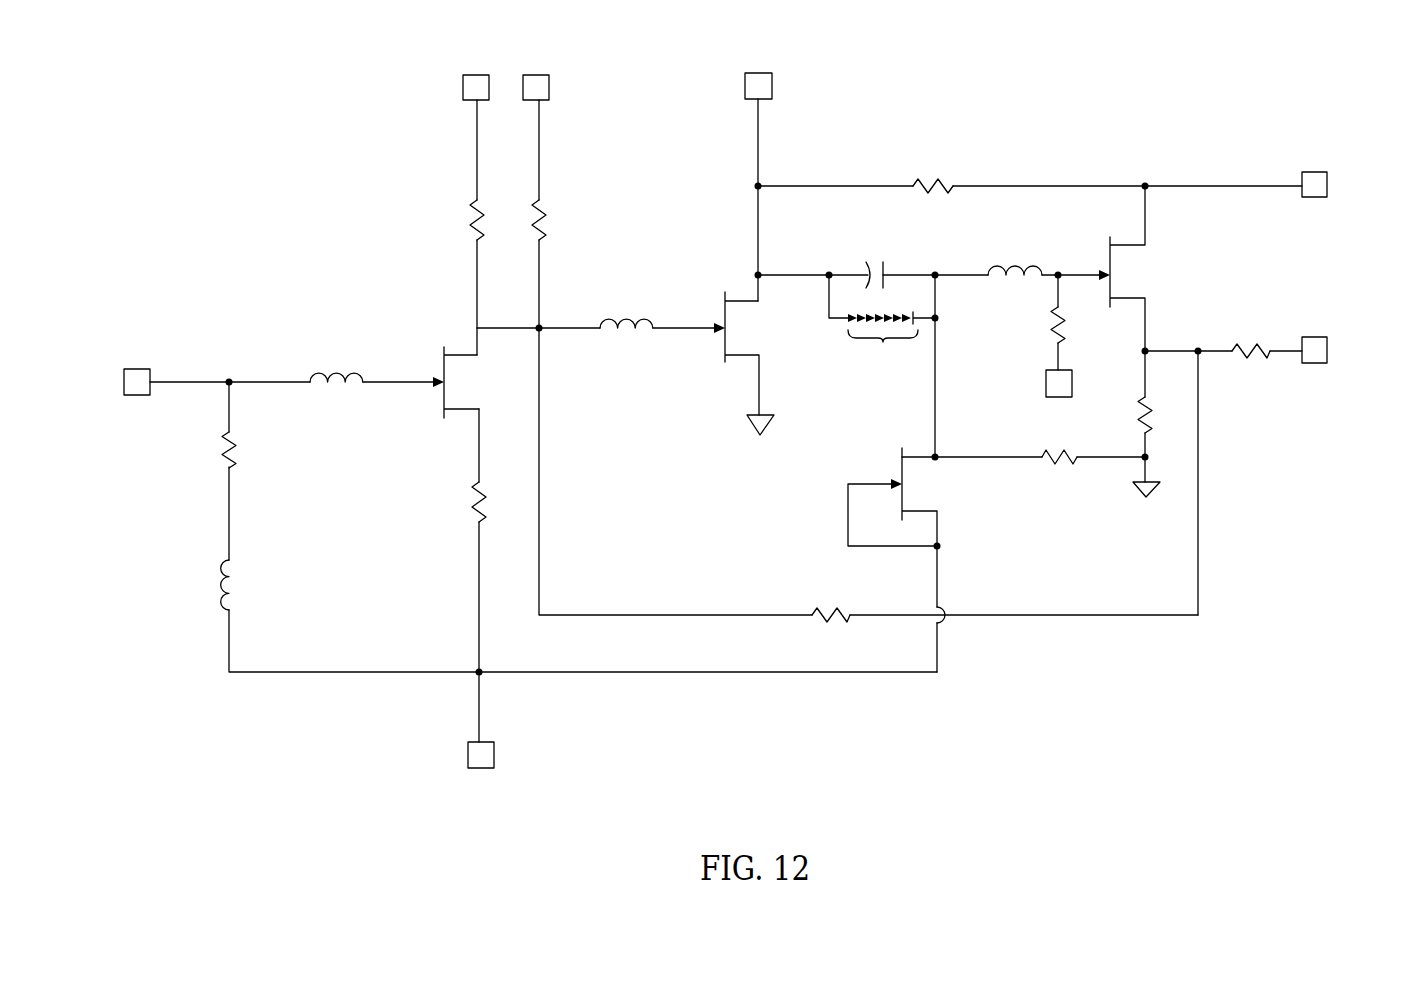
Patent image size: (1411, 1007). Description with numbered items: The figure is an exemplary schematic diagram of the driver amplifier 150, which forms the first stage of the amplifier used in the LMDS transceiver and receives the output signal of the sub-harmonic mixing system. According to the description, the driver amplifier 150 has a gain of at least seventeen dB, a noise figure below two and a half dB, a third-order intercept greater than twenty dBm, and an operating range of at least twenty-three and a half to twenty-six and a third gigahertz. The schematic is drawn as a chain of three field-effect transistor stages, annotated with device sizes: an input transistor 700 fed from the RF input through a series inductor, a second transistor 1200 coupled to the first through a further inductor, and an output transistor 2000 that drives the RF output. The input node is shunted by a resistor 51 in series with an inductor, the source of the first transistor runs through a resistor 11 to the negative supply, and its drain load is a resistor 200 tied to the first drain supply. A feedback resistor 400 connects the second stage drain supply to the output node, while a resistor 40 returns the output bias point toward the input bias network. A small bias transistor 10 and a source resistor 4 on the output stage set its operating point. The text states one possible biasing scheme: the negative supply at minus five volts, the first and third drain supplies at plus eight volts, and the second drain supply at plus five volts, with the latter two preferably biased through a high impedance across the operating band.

The driver amplifier 150 is at (728, 423).
The input transistor 700 is at (459, 382).
The second stage transistor 1200 is at (747, 363).
The output transistor 2000 is at (1137, 268).
The bias transistor 10 is at (896, 560).
The source resistor 4 is at (1155, 416).
The feedback resistor 40 is at (831, 602).
The input shunt resistor 51 is at (242, 471).
The source degeneration resistor 11 is at (492, 575).
The drain load resistor 200 is at (454, 227).
The output feedback resistor 400 is at (1030, 173).